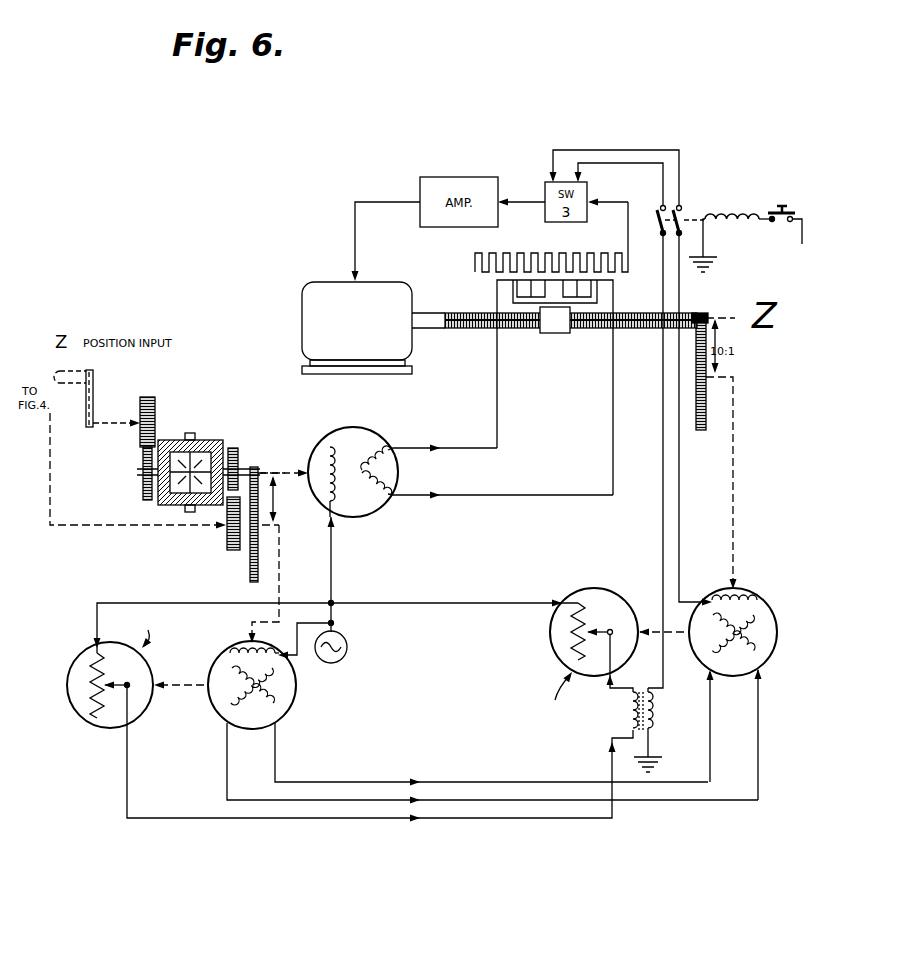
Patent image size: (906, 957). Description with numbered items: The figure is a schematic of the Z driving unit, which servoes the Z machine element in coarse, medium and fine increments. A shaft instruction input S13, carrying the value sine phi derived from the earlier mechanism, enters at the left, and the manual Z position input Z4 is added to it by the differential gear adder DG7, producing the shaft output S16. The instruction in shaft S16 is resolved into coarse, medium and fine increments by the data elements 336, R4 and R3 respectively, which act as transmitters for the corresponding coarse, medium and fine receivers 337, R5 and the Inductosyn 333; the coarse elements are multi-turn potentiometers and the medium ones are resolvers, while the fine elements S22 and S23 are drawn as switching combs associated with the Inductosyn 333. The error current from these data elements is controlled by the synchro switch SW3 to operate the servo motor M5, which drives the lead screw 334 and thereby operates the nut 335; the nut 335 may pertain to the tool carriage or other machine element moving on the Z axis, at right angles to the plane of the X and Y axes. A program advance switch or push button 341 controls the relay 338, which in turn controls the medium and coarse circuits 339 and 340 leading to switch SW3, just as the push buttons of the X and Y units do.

The servo motor M5 is at (302, 297).
The Inductosyn 333 is at (490, 277).
The lead screw 334 is at (443, 331).
The nut 335 is at (551, 334).
The switch comb S22 is at (582, 255).
The fine switch comb S23 is at (597, 291).
The coarse data element 336 is at (68, 690).
The coarse receiver 337 is at (554, 641).
The relay 338 is at (707, 216).
The medium circuit 339 is at (679, 173).
The coarse circuit 340 is at (663, 196).
The program advance switch or push button 341 is at (797, 199).
The fine data element R3 is at (347, 429).
The medium data element R4 is at (294, 708).
The medium receiver R5 is at (754, 672).
The manual Z position input Z4 is at (121, 422).
The differential gear adder DG7 is at (207, 438).
The shaft instruction input S13 is at (165, 526).
The shaft output S16 is at (301, 473).